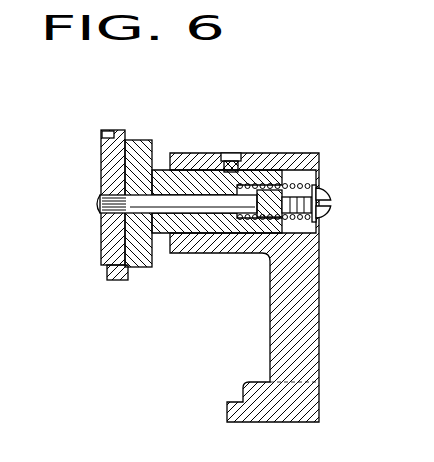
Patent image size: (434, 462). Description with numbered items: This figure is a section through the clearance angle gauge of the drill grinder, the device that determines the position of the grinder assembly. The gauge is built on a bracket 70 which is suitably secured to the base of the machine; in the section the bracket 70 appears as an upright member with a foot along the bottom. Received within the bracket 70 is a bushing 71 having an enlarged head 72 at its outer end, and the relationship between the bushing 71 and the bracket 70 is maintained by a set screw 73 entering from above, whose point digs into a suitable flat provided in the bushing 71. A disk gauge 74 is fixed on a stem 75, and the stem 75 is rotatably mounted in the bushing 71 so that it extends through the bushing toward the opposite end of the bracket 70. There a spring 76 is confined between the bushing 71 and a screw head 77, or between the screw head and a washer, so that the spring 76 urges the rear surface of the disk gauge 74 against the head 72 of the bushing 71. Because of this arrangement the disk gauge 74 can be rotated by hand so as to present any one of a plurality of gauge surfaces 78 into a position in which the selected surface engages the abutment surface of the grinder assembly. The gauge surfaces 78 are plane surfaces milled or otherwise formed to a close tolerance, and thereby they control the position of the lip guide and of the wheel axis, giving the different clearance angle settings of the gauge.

The bracket 70 is at (277, 316).
The bushing 71 is at (165, 172).
The head 72 is at (136, 148).
The set screw 73 is at (237, 153).
The disk gauge 74 is at (101, 170).
The stem 75 is at (165, 212).
The spring 76 is at (300, 185).
The screw head 77 is at (328, 210).
The gauge surfaces 78 is at (104, 130).